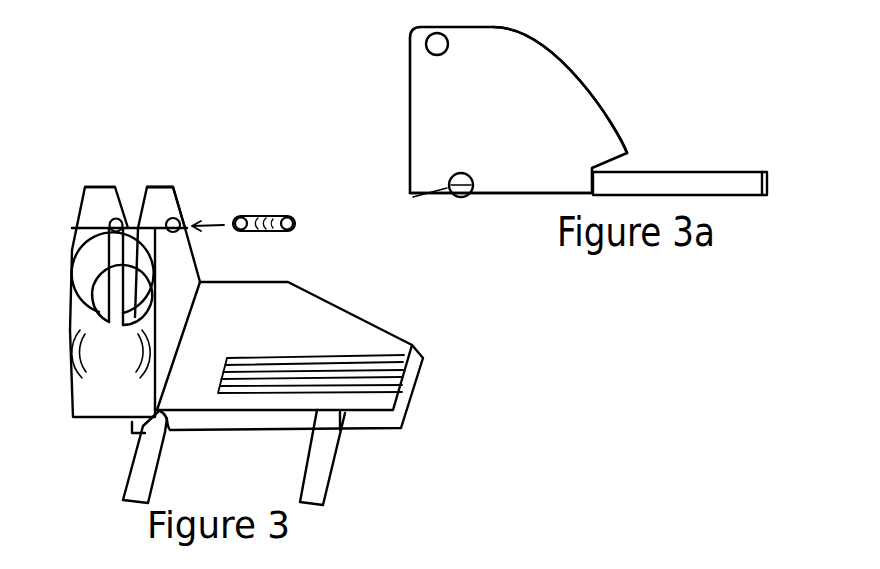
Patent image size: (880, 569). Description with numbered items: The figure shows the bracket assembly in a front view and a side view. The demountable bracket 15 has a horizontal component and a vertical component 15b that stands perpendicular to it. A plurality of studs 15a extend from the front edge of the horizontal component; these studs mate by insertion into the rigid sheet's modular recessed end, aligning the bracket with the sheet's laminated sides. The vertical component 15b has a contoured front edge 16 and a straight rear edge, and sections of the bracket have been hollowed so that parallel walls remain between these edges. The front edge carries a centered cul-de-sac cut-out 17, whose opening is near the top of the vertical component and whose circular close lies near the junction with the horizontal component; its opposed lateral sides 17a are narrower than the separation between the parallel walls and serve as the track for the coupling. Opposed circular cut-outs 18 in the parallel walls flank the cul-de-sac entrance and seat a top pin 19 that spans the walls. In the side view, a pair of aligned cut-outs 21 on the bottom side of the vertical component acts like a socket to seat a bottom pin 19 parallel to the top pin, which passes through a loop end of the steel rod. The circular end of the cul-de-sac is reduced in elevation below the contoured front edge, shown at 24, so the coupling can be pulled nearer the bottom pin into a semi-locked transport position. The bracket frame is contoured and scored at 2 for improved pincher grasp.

In FIG. 3, the scoring for pincher grasp 2 is at (405, 380).
In FIG. 3, the demountable bracket 15 is at (317, 288).
In FIG. 3, the studs 15a is at (297, 471).
In FIG. 3A, the studs 15a is at (748, 202).
In FIG. 3, the vertical component 15b is at (187, 197).
In FIG. 3A, the vertical component 15b is at (408, 215).
In FIG. 3, the contoured front edge 16 is at (90, 410).
In FIG. 3A, the contoured front edge 16 is at (582, 62).
In FIG. 3, the cul-de-sac cut-out 17 is at (113, 278).
In FIG. 3, the lateral sides of cul-de-sac 17a is at (140, 193).
In FIG. 3, the circular cut-outs 18 is at (165, 222).
In FIG. 3A, the circular cut-outs 18 is at (425, 43).
In FIG. 3, the pin 19 is at (410, 197).
In FIG. 3A, the aligned cut-outs 21 is at (472, 200).
In FIG. 3, the reduced-elevation circular end 24 is at (78, 355).